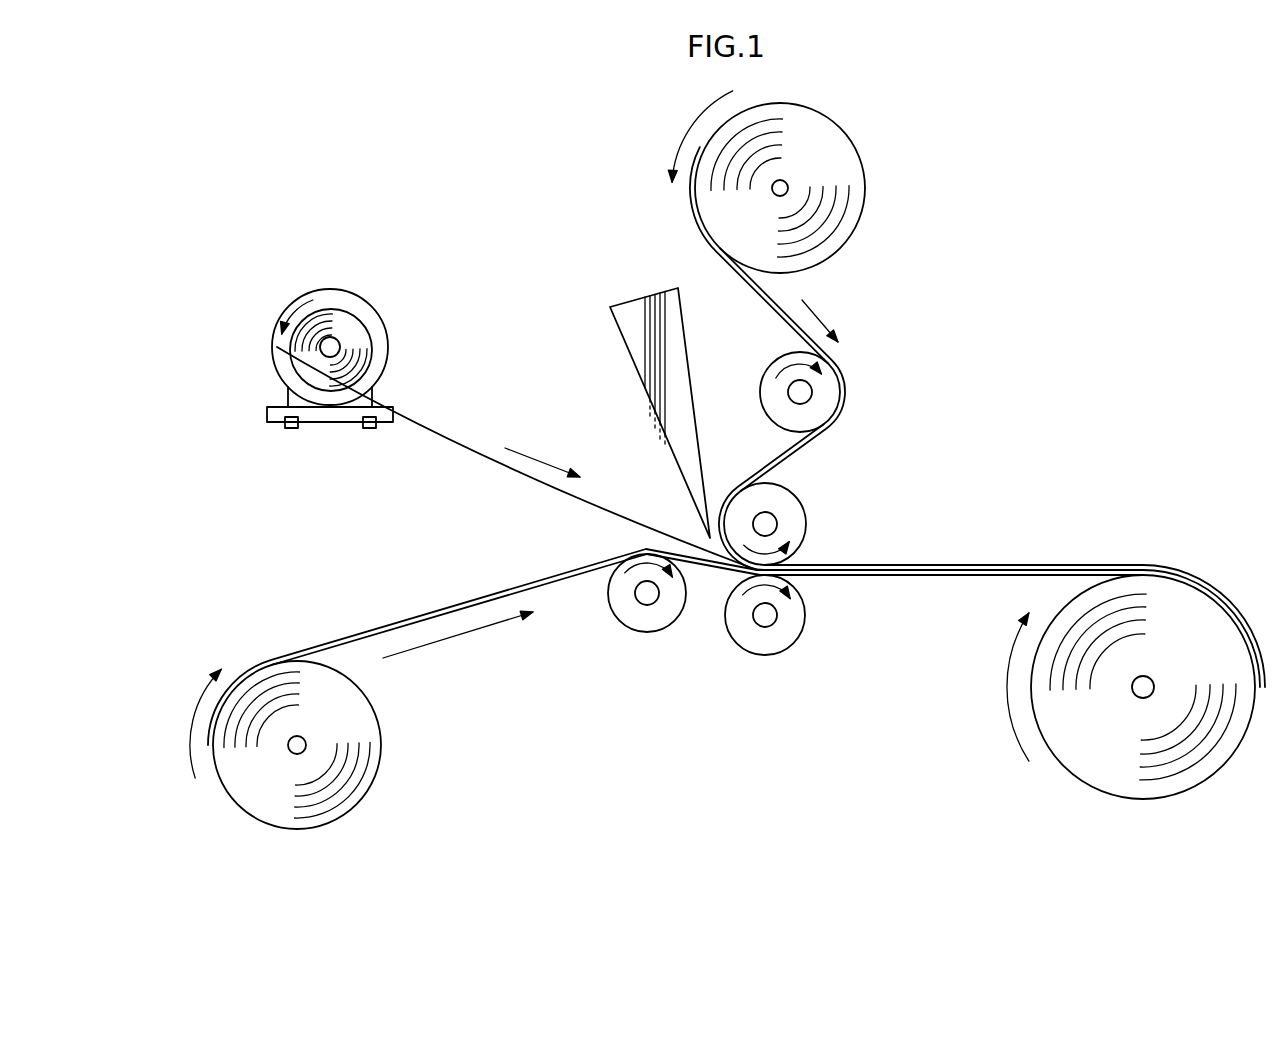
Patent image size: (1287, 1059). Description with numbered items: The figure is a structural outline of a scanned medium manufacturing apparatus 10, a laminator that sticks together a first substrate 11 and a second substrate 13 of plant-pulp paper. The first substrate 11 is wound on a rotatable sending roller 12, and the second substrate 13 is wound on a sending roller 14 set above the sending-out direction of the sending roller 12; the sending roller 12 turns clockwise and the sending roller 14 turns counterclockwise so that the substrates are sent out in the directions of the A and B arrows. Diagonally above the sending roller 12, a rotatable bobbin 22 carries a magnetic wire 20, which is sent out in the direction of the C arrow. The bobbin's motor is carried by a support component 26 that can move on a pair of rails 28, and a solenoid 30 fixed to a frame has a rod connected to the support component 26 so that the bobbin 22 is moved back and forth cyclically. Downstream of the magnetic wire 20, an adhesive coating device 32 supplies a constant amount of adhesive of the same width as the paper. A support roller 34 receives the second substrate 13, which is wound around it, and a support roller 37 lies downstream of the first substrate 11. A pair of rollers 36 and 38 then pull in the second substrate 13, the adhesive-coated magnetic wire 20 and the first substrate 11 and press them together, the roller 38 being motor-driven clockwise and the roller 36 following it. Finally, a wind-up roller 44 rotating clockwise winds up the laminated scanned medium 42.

The scanned medium manufacturing apparatus 10 is at (459, 150).
The first substrate 11 is at (372, 792).
The sending roller 12 is at (296, 752).
The second substrate 13 is at (818, 115).
The sending roller 14 is at (788, 186).
The magnetic wire 20 is at (360, 317).
The bobbin 22 is at (322, 351).
The support component 26 is at (267, 412).
The rails 28 is at (293, 429).
The solenoid 30 is at (341, 293).
The adhesive coating device 32 is at (628, 306).
The support roller 34 is at (823, 382).
The roller 36 is at (797, 515).
The support roller 37 is at (655, 607).
The roller 38 is at (795, 630).
The scanned medium 42 is at (930, 578).
The wind-up roller 44 is at (1143, 698).
The arrow A is at (477, 640).
The arrow B is at (803, 300).
The arrow C is at (540, 455).